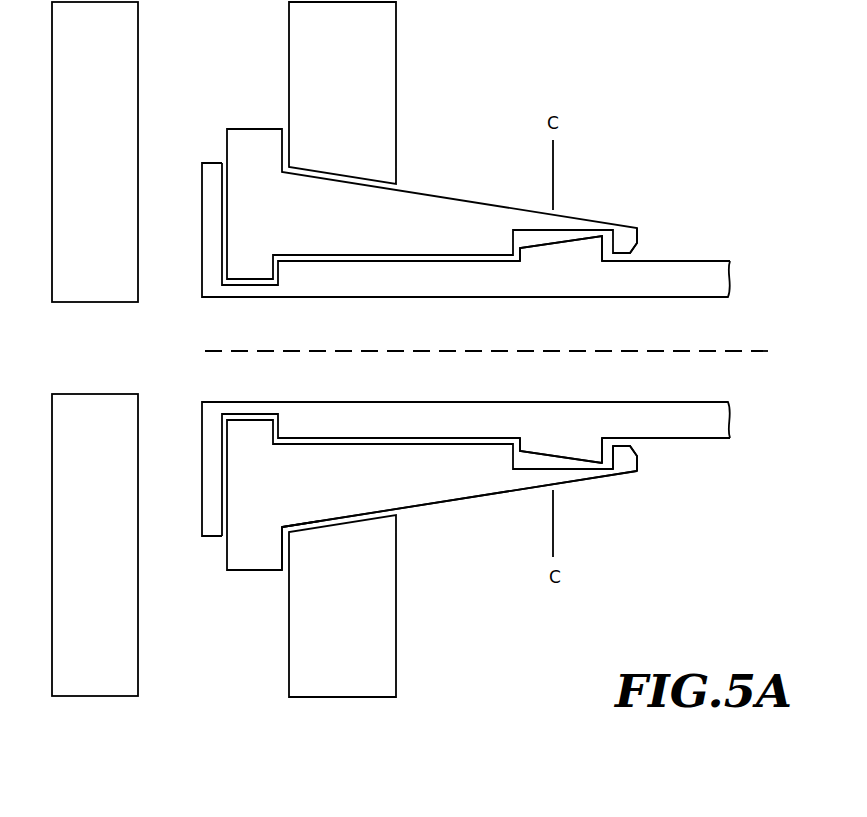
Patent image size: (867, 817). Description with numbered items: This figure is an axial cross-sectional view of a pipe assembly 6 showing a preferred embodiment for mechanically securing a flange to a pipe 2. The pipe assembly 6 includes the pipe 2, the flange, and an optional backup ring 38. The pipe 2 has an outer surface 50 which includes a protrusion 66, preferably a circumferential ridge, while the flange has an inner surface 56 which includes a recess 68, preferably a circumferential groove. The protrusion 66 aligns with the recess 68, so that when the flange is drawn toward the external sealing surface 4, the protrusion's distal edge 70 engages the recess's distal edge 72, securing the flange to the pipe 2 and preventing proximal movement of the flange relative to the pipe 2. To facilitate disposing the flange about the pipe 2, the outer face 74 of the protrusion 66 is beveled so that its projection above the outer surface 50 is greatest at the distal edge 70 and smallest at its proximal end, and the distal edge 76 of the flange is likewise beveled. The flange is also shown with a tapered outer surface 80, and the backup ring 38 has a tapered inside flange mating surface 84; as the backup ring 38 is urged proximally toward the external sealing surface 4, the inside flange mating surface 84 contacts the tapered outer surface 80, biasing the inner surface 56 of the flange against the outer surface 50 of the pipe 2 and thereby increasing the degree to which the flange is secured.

The pipe 2 is at (708, 270).
The external sealing surface 4 is at (138, 31).
The pipe assembly 6 is at (447, 582).
The backup ring 38 is at (345, 687).
The outer surface 50 is at (703, 438).
The inner surface 56 is at (428, 445).
The protrusion 66 is at (585, 450).
The recess 68 is at (525, 460).
The distal edge 70 is at (608, 458).
The distal edge 72 is at (620, 451).
The outer face 74 is at (573, 238).
The distal edge 76 is at (633, 253).
The outer surface 80 is at (437, 194).
The inside flange mating surface 84 is at (310, 527).